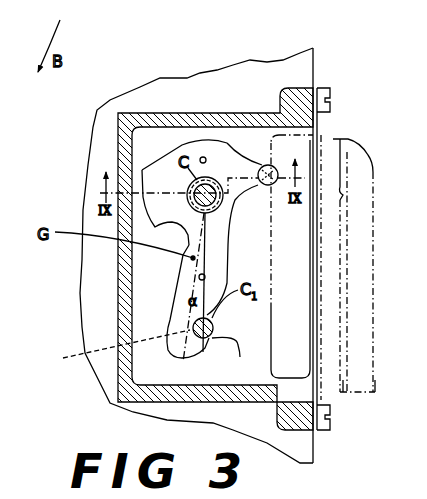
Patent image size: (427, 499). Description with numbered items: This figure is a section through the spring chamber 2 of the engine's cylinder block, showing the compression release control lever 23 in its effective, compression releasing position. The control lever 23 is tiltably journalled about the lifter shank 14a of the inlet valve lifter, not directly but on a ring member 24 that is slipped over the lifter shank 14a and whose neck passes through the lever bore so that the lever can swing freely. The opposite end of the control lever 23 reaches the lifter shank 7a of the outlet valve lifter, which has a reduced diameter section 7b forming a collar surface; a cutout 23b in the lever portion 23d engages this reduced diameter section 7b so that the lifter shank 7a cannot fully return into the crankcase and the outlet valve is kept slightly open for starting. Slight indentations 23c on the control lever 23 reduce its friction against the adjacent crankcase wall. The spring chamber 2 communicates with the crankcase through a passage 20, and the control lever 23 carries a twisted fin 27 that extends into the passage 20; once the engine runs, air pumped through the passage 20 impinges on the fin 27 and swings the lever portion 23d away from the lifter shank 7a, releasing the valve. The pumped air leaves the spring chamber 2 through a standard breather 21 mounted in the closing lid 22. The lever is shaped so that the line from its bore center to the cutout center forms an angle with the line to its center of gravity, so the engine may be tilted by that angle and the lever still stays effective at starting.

The spring chamber 2 is at (146, 150).
The lifter shank 7a is at (226, 355).
The reduced diameter section 7b is at (213, 322).
The lifter shank 14a is at (222, 142).
The passage 20 is at (262, 168).
The breather 21 is at (336, 139).
The closing lid 22 is at (333, 283).
The compression release control lever 23 is at (147, 210).
The cutout 23b is at (107, 350).
The indentations 23c is at (200, 158).
The lever portion 23d is at (187, 347).
The ring member 24 is at (187, 185).
The fin 27 is at (260, 165).